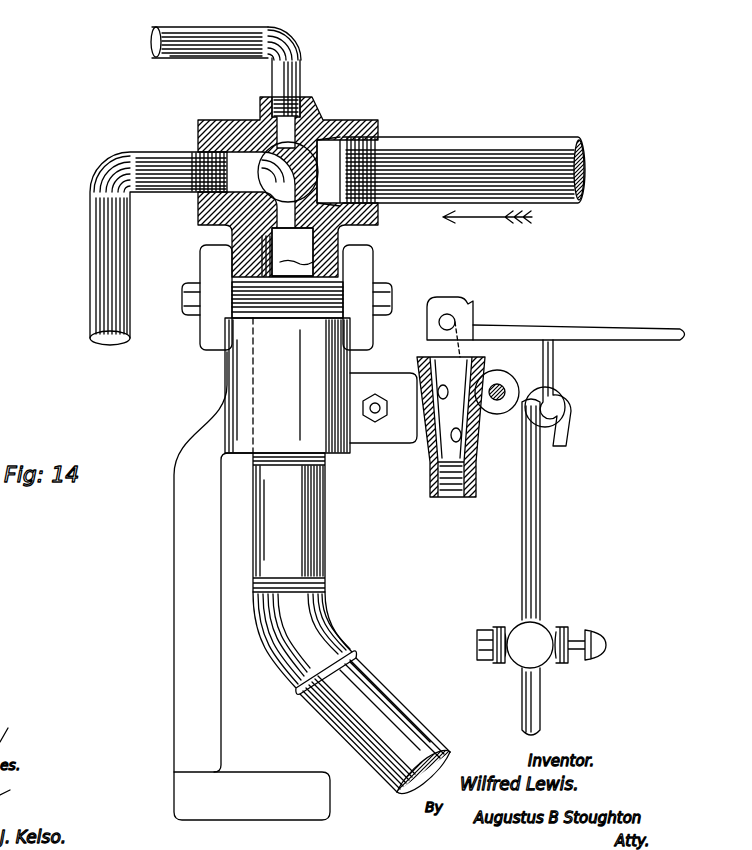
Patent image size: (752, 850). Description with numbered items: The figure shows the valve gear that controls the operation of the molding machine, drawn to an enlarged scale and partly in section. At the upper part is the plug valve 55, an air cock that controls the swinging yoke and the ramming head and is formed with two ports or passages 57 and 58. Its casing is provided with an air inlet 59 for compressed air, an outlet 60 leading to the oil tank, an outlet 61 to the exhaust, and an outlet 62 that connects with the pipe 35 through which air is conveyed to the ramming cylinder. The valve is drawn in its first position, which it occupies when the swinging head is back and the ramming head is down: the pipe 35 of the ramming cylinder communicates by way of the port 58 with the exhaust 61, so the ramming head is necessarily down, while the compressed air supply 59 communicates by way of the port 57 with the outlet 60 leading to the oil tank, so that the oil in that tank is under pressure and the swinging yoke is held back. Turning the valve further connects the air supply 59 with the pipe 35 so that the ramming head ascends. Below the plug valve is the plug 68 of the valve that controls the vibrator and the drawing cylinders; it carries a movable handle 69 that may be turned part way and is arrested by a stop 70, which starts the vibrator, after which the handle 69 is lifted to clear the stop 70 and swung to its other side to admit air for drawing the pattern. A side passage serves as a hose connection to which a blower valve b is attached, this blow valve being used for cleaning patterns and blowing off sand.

The pipe 35 is at (362, 685).
The plug valve 55 is at (308, 148).
The port 57 is at (345, 142).
The port 58 is at (199, 196).
The air inlet 59 is at (584, 176).
The outlet to the oil tank 60 is at (280, 77).
The outlet to the exhaust 61 is at (146, 162).
The outlet to the pipe of the ramming head 62 is at (287, 252).
The plug 68 is at (455, 365).
The movable handle 69 is at (632, 333).
The stop 70 is at (549, 372).
The blower valve b is at (541, 731).